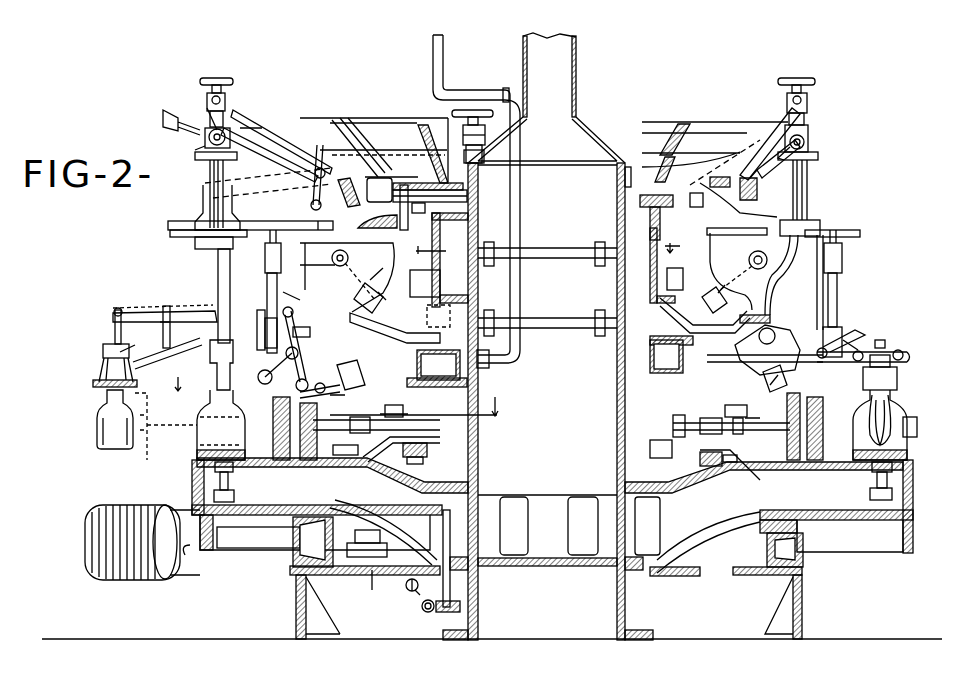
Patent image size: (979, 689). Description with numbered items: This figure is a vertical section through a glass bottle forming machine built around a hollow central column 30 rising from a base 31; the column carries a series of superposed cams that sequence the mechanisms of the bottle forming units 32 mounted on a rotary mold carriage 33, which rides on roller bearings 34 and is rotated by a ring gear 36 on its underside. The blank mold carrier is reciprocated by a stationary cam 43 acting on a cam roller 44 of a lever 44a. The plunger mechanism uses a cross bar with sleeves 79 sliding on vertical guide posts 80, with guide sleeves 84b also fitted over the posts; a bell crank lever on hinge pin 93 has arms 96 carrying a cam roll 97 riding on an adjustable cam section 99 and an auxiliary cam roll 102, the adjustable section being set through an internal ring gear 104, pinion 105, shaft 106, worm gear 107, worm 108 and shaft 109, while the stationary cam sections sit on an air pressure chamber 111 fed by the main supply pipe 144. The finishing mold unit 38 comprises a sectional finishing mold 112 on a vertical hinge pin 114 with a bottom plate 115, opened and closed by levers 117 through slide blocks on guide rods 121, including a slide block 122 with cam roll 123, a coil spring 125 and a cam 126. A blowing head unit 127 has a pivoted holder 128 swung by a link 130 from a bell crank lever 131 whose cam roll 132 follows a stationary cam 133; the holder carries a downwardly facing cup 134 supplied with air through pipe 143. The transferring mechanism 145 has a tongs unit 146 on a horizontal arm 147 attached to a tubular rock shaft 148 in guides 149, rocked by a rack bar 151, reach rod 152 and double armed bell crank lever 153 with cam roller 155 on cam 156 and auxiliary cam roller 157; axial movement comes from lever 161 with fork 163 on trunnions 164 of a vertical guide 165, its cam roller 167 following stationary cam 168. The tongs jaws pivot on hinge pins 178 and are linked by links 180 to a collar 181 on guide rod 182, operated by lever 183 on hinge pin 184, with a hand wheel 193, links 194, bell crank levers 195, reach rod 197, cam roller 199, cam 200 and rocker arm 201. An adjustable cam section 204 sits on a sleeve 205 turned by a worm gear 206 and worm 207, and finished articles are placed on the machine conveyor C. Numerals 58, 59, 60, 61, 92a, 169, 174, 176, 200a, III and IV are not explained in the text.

The hollow central column 30 is at (480, 440).
The base 31 is at (802, 603).
The bottle forming unit 32 is at (900, 314).
The rotary mold carriage 33 is at (913, 482).
The roller bearings 34 is at (767, 554).
The ring gear 36 is at (190, 545).
The finishing mold unit 38 is at (912, 392).
The stationary cam 43 is at (367, 587).
The cam roller 44 is at (370, 540).
The lever 44a is at (340, 522).
The block 58 is at (657, 449).
The nut 59 is at (725, 460).
The bearing block 60 is at (672, 474).
The inclined plate 61 is at (543, 458).
The vertical sleeves 79 is at (843, 263).
The vertical guide posts 80 is at (838, 284).
The vertical guide sleeves 84b is at (848, 335).
The cam lever 92a is at (292, 288).
The horizontal hinge pin 93 is at (756, 257).
The arms 96 is at (720, 290).
The cam roll 97 is at (771, 302).
The adjustable cam section 99 is at (383, 290).
The auxiliary cam roll 102 is at (716, 298).
The internal ring gear 104 is at (430, 320).
The pinion 105 is at (455, 289).
The shaft 106 is at (445, 515).
The worm gear 107 is at (462, 606).
The worm 108 is at (428, 612).
The shaft 109 is at (424, 607).
The air pressure chamber 111 is at (662, 366).
The sectional finishing mold 112 is at (908, 405).
The vertical hinge pin 114 is at (790, 470).
The bottom plate 115 is at (907, 455).
The levers 117 is at (918, 428).
The guide rods 121 is at (685, 420).
The slide block 122 is at (745, 425).
The cam roll 123 is at (745, 408).
The coil spring 125 is at (745, 418).
The cam 126 is at (722, 420).
The blowing head unit 127 is at (905, 370).
The pivoted holder 128 is at (903, 352).
The link 130 is at (840, 345).
The bell crank lever 131 is at (762, 358).
The cam roll 132 is at (777, 390).
The stationary cam 133 is at (762, 380).
The downwardly facing cup 134 is at (898, 378).
The pipe 143 is at (376, 336).
The main supply pipe 144 is at (519, 284).
The transferring mechanism 145 is at (200, 310).
The tongs unit 146 is at (96, 380).
The horizontal arm 147 is at (198, 341).
The tubular rock shaft 148 is at (808, 173).
The guides 149 is at (810, 215).
The horizontal rack bar 151 is at (848, 237).
The reach rod 152 is at (768, 225).
The double armed bell crank lever 153 is at (400, 219).
The cam roller 155 is at (703, 200).
The cam 156 is at (398, 183).
The auxiliary cam roller 157 is at (675, 198).
The lever 161 is at (752, 170).
The fork 163 is at (817, 157).
The trunnions 164 is at (808, 140).
The vertical guide 165 is at (810, 148).
The cam roller 167 is at (380, 202).
The stationary cam 168 is at (752, 203).
The bar 169 is at (355, 208).
The lever 174 is at (212, 128).
The handle 176 is at (166, 112).
The hinge pins 178 is at (100, 358).
The links 180 is at (100, 350).
The collar 181 is at (115, 320).
The guide rod 182 is at (125, 352).
The lever 183 is at (163, 306).
The horizontal hinge pin 184 is at (165, 306).
The hand wheel 193 is at (800, 78).
The links 194 is at (808, 103).
The bell crank levers 195 is at (790, 112).
The reach rod 197 is at (272, 116).
The cam roller 199 is at (355, 120).
The cam 200 is at (340, 122).
The panel 200a is at (710, 122).
The rocker arm 201 is at (329, 177).
The adjustable section 204 is at (617, 210).
The circumferentially adjustable sleeve 205 is at (660, 310).
The worm gear 206 is at (480, 470).
The worm 207 is at (415, 590).
The machine conveyor C is at (130, 565).
The section line III is at (336, 396).
The section line IV is at (545, 253).